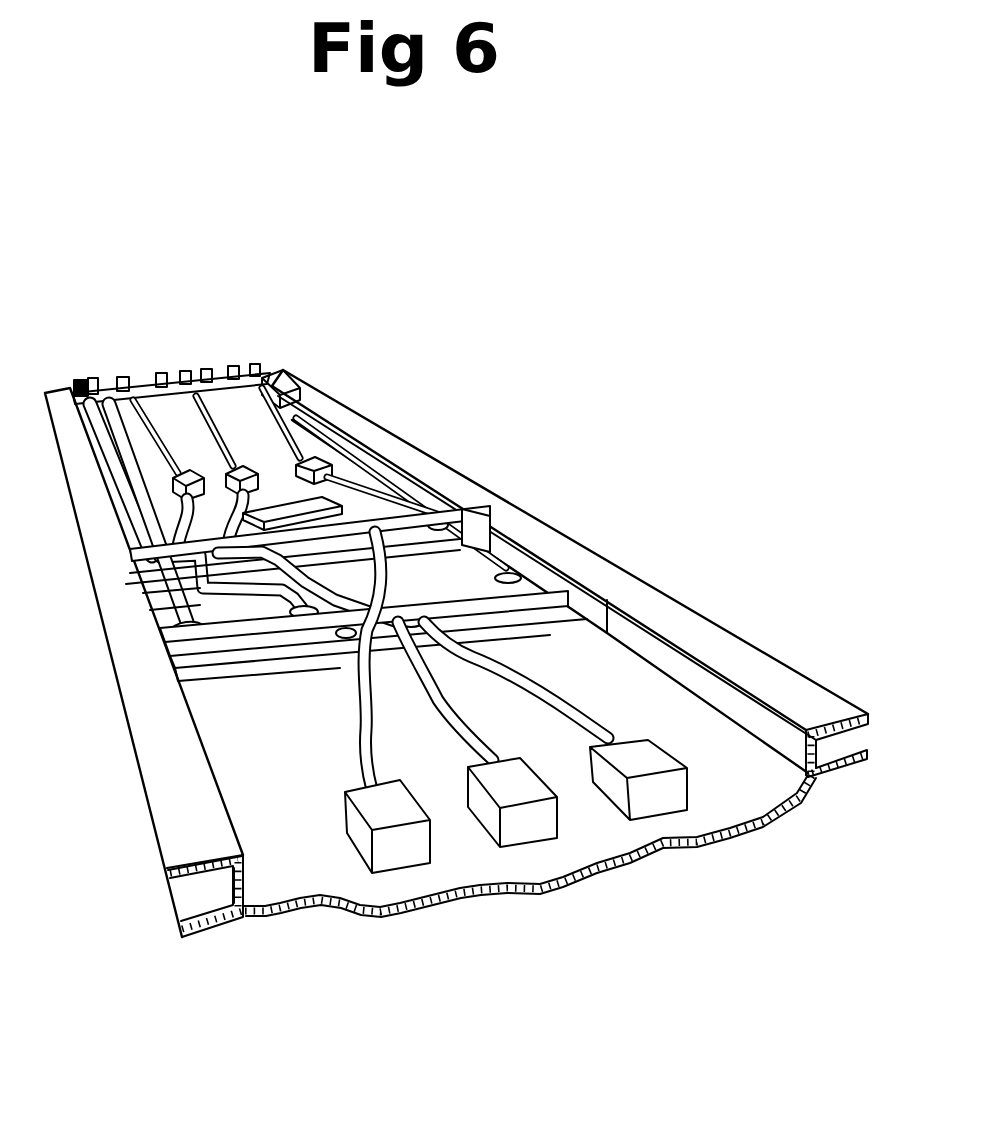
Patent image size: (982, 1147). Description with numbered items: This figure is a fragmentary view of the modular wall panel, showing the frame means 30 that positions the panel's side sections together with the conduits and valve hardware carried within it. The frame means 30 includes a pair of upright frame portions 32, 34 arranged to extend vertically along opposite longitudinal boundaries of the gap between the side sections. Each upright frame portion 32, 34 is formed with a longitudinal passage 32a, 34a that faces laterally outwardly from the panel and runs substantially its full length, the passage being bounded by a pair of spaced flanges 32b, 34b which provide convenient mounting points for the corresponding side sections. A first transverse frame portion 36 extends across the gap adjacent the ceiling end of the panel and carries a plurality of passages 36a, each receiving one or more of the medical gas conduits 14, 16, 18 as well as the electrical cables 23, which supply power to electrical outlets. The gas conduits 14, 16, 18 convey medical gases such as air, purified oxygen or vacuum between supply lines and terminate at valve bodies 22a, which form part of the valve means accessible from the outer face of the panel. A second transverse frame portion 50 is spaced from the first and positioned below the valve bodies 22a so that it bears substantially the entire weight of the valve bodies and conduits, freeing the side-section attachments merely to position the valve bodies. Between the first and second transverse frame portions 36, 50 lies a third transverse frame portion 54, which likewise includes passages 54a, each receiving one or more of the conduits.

The medical gas conduit 14 is at (235, 367).
The medical gas conduit 16 is at (89, 390).
The medical gas conduit 18 is at (80, 392).
The electrical cables 23 is at (203, 368).
The first transverse frame portion 36 is at (245, 375).
The passages 36a is at (283, 367).
The upright frame portion 34 is at (320, 383).
The longitudinal passage 34a is at (837, 747).
The flanges 34b is at (672, 623).
The frame means 30 is at (398, 423).
The third transverse frame portion 54 is at (430, 512).
The passages 54a is at (530, 587).
The second transverse frame portion 50 is at (600, 545).
The valve bodies 22a is at (163, 638).
The upright frame portion 32 is at (160, 778).
The longitudinal passage 32a is at (208, 903).
The flanges 32b is at (217, 865).